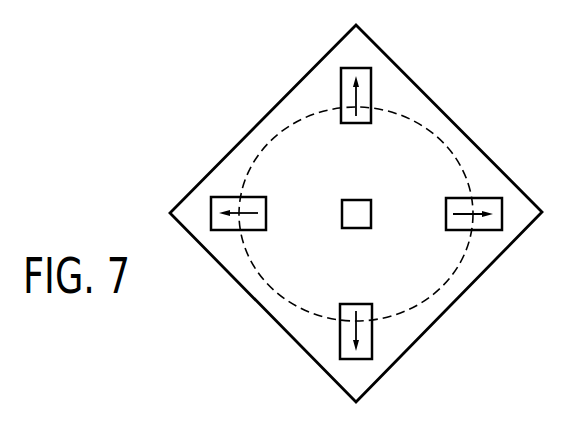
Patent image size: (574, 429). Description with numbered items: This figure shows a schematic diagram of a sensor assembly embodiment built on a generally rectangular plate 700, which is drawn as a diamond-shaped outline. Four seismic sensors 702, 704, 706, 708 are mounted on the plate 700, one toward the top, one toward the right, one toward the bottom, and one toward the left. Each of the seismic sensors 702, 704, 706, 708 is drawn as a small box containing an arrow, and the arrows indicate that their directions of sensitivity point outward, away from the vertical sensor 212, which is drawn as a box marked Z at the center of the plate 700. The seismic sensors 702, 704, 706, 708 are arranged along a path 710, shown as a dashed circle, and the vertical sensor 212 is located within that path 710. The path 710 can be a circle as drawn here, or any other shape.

The plate 700 is at (450, 117).
The path 710 is at (404, 109).
The seismic sensor 702 is at (341, 80).
The seismic sensor 704 is at (487, 198).
The seismic sensor 706 is at (340, 347).
The seismic sensor 708 is at (224, 197).
The vertical sensor 212 is at (356, 200).